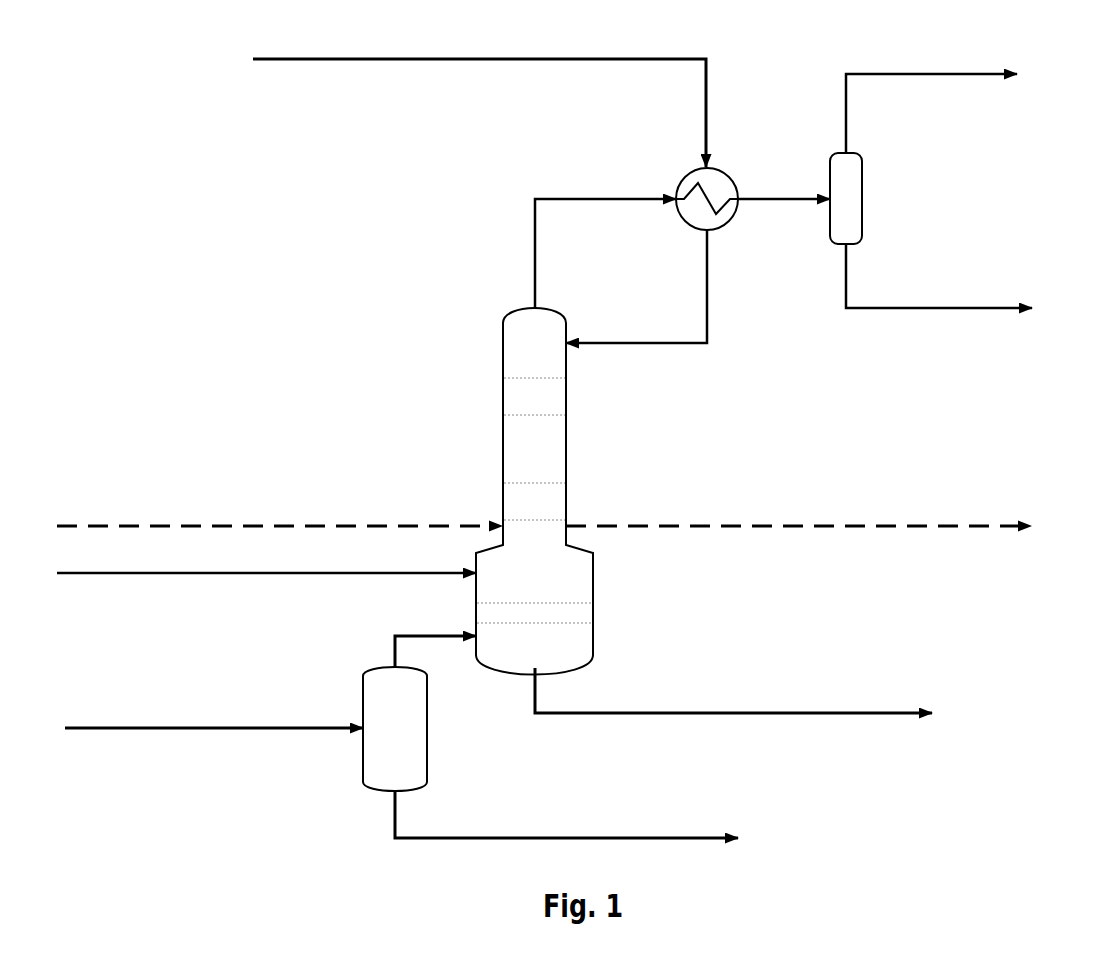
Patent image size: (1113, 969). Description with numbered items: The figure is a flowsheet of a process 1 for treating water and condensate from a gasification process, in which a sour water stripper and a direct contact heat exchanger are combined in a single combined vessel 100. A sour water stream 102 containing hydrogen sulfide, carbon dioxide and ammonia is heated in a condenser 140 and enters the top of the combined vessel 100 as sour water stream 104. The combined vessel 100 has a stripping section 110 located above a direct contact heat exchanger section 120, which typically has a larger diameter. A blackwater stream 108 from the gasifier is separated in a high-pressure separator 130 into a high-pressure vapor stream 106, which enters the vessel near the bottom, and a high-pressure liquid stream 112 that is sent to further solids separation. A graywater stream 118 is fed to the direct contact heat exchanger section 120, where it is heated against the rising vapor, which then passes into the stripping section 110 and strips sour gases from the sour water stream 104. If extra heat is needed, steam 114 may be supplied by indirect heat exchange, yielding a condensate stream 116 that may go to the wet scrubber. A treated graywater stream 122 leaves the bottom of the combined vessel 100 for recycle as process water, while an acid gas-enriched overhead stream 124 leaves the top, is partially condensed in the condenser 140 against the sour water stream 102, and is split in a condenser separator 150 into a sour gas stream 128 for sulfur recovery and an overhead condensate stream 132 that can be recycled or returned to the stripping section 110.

The process 1 is at (1076, 58).
The combined vessel 100 is at (487, 491).
The sour water stream 102 is at (382, 61).
The sour water stream 104 is at (674, 345).
The high-pressure vapor stream 106 is at (450, 638).
The blackwater stream 108 is at (175, 730).
The stripping section 110 is at (534, 449).
The high-pressure liquid stream 112 is at (612, 836).
The steam 114 is at (286, 520).
The condensate stream 116 is at (762, 520).
The graywater stream 118 is at (180, 575).
The direct contact heat exchanger section 120 is at (534, 599).
The treated graywater stream 122 is at (785, 712).
The acid gas-enriched overhead stream 124 is at (579, 201).
The sour gas stream 128 is at (936, 76).
The high-pressure separator 130 is at (395, 729).
The overhead condensate stream 132 is at (936, 310).
The condenser 140 is at (683, 180).
The condenser separator 150 is at (862, 199).